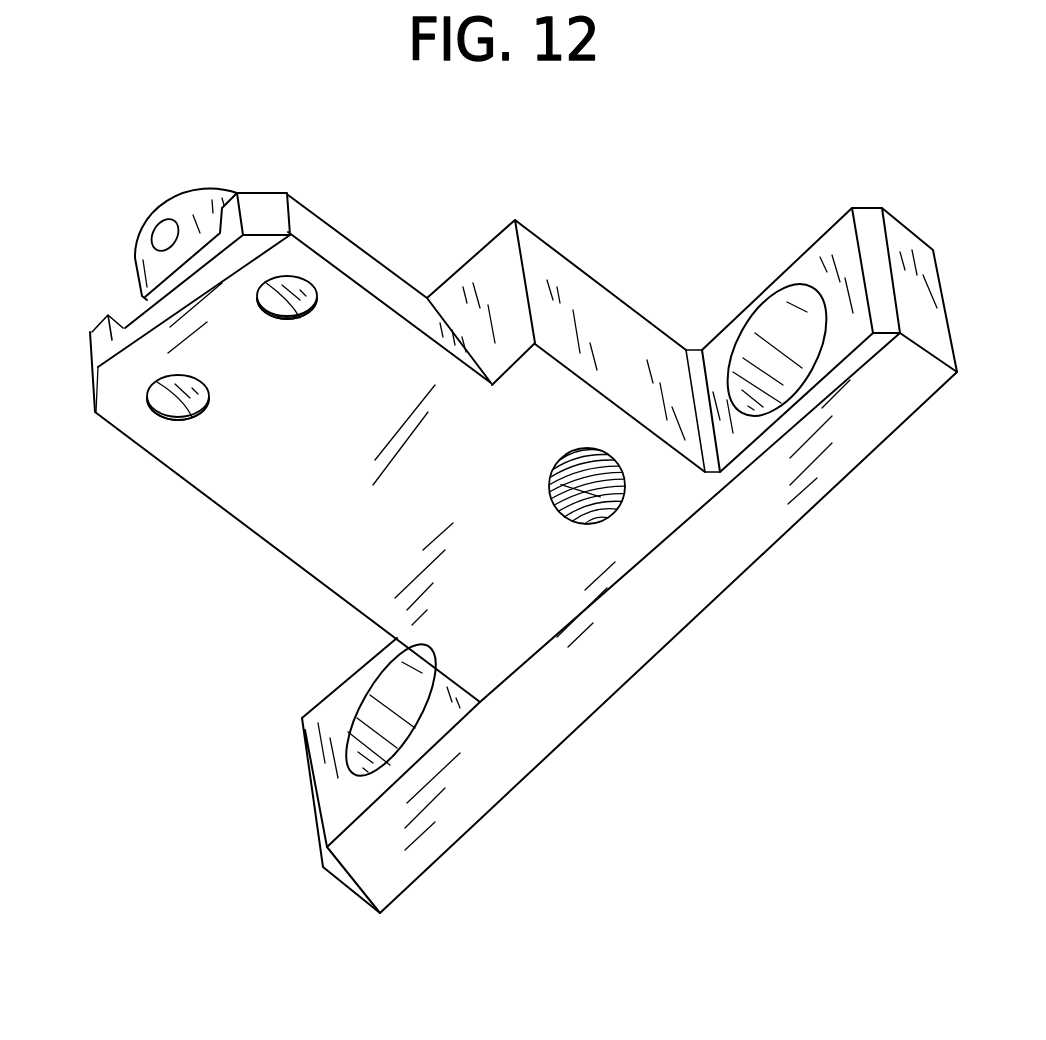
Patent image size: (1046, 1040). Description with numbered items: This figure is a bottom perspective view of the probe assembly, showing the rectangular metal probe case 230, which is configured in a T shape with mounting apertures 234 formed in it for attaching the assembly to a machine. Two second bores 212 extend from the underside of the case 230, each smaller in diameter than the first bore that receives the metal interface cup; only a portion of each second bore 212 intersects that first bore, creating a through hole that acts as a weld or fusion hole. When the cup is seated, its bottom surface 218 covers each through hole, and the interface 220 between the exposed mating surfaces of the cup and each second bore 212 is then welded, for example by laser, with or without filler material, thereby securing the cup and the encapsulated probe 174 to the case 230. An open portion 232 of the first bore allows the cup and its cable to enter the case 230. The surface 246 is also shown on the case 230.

The encapsulated probe 174 is at (185, 210).
The portion of bore 232 is at (114, 293).
The bottom surface 218 is at (296, 272).
The second bore 212 is at (325, 276).
The interface 220 is at (290, 330).
The mounting apertures 234 is at (777, 323).
The top surface 246 is at (332, 470).
The metal probe case 230 is at (673, 588).